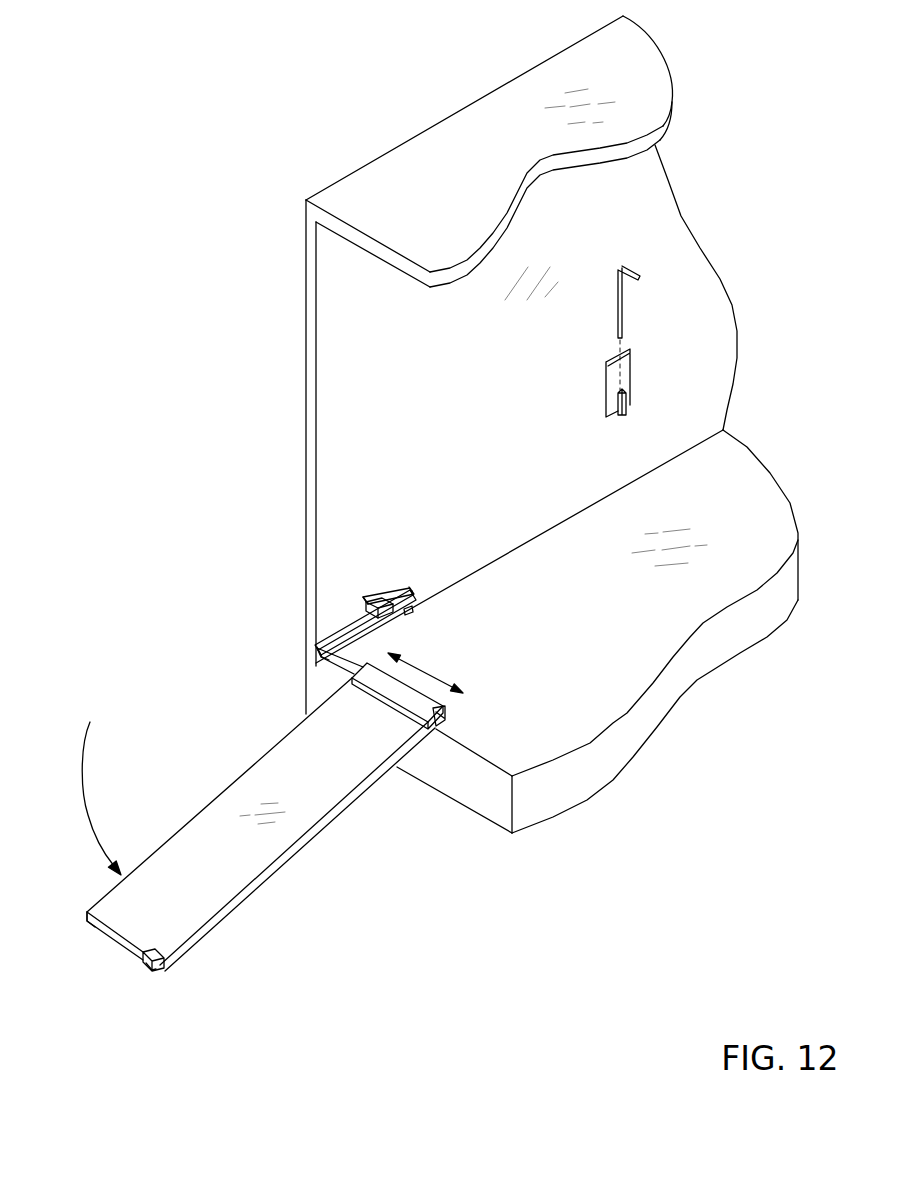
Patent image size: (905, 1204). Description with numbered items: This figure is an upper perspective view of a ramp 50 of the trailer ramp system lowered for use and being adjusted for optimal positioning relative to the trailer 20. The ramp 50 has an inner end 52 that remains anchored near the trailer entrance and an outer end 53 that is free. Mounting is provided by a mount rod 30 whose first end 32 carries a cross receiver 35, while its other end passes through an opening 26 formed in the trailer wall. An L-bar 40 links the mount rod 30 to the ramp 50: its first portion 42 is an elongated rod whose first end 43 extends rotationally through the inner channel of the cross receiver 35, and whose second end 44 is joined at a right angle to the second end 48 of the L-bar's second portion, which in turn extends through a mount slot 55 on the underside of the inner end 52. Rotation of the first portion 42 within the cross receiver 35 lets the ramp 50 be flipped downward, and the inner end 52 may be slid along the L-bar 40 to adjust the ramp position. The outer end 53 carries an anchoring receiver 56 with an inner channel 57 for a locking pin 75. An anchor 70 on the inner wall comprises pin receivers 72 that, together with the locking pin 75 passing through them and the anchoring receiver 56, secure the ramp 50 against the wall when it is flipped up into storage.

The trailer 20 is at (292, 317).
The opening 26 is at (365, 594).
The mount rod 30 is at (377, 595).
The first end 32 is at (393, 593).
The cross receiver 35 is at (410, 613).
The L-bar 40 is at (324, 670).
The first portion 42 is at (412, 613).
The first end 43 is at (413, 592).
The second end 44 is at (331, 655).
The second end 48 is at (317, 657).
The ramp 50 is at (222, 790).
The inner end 52 is at (382, 682).
The outer end 53 is at (92, 925).
The mount slot 55 is at (445, 722).
The anchoring receiver 56 is at (150, 970).
The inner channel 57 is at (163, 967).
The anchor 70 is at (592, 374).
The pin receiver 72 is at (626, 412).
The locking pin 75 is at (633, 276).